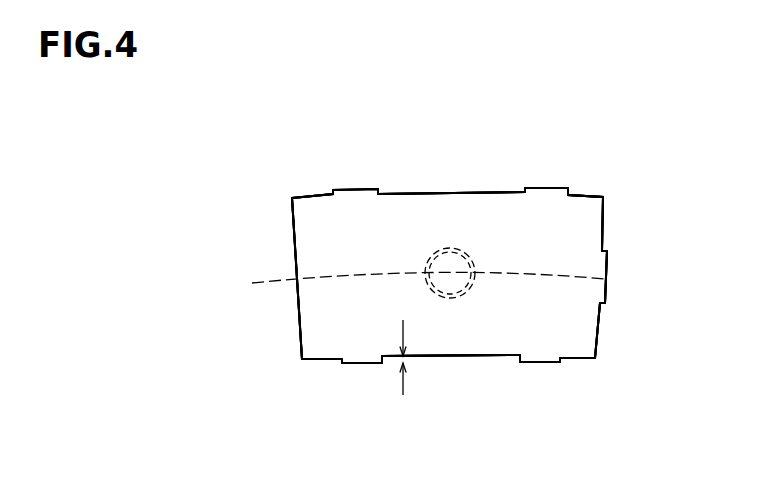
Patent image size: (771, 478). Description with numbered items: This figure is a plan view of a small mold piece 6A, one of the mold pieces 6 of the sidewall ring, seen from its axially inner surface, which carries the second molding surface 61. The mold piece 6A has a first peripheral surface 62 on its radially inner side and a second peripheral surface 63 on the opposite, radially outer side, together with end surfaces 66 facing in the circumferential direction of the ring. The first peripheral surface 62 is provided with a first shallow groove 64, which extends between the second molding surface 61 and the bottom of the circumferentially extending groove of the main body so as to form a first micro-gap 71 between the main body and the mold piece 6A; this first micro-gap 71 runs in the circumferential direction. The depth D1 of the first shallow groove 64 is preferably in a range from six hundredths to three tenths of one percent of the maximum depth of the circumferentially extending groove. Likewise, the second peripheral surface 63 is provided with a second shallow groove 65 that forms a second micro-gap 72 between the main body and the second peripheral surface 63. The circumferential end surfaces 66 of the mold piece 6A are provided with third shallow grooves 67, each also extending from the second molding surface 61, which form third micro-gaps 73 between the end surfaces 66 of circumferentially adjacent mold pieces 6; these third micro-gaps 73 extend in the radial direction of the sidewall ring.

The mold piece 6 is at (639, 170).
The mold piece having a small circumferential length 6A is at (626, 150).
The second molding surface 61 is at (322, 228).
The first peripheral surface 62 is at (358, 362).
The second peripheral surface 63 is at (541, 187).
The first shallow groove 64 is at (503, 360).
The second shallow groove 65 is at (452, 190).
The end surface 66 is at (607, 290).
The third shallow groove 67 is at (603, 345).
The first micro-gap 71 is at (462, 358).
The second micro-gap 72 is at (396, 193).
The third micro-gap 73 is at (610, 223).
The depth of the first shallow groove D1 is at (403, 360).